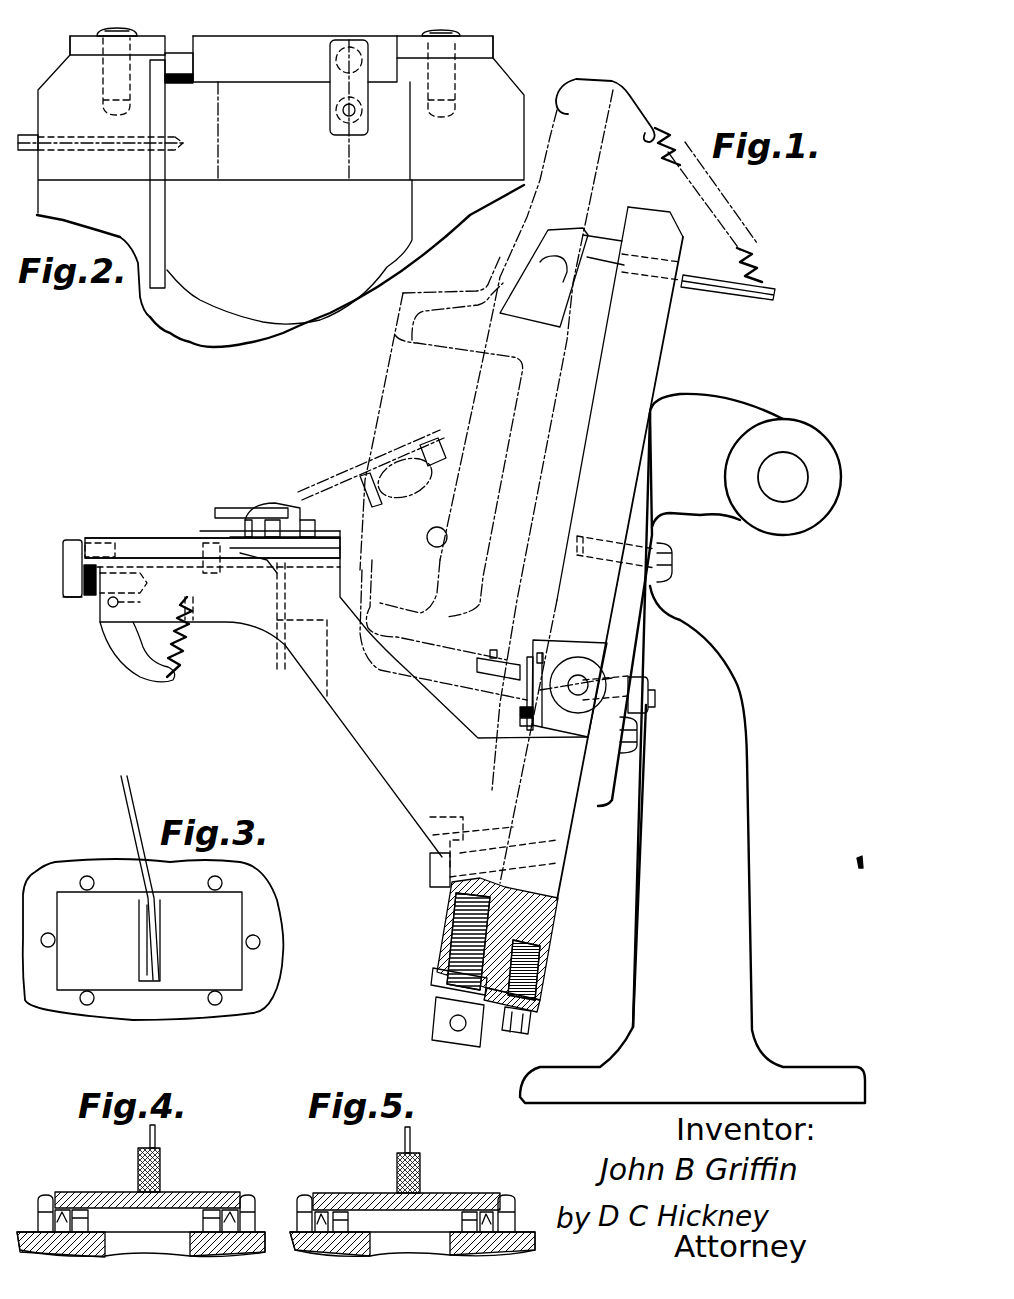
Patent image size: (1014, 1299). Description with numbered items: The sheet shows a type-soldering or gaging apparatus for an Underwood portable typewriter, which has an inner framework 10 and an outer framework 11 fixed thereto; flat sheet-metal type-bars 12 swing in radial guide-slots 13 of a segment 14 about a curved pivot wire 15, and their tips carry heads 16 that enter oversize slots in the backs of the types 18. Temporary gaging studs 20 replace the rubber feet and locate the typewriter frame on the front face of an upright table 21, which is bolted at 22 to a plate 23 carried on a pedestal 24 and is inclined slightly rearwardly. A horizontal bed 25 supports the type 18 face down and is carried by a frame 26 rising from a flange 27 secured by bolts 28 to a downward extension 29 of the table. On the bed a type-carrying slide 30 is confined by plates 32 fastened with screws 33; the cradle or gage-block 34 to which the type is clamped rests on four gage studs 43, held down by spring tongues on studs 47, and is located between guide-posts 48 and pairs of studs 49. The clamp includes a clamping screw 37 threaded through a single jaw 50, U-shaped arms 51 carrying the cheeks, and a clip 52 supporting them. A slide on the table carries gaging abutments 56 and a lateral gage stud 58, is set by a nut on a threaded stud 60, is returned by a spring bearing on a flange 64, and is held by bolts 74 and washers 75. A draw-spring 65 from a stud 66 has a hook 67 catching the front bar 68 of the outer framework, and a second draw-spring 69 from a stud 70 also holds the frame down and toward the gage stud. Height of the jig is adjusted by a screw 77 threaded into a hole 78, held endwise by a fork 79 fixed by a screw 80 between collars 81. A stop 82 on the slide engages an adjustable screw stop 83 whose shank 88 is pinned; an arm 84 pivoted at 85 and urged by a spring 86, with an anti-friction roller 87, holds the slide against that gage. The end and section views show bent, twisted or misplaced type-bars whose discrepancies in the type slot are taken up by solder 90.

In FIG. 1, the inner framework 10 is at (487, 354).
In FIG. 1, the outer framework 11 is at (502, 247).
In FIG. 1, the type-bar 12 is at (345, 470).
In FIG. 3, the type-bar 12 is at (124, 816).
In FIG. 4, the type-bar 12 is at (156, 1137).
In FIG. 5, the type-bar 12 is at (412, 1138).
In FIG. 1, the guide-slot 13 is at (430, 456).
In FIG. 1, the segment 14 is at (398, 502).
In FIG. 1, the pivot wire 15 is at (418, 482).
In FIG. 1, the head 16 is at (272, 499).
In FIG. 1, the type 18 is at (300, 490).
In FIG. 3, the type 18 is at (140, 941).
In FIG. 1, the gaging stud 20 is at (590, 277).
In FIG. 1, the table 21 is at (668, 350).
In FIG. 1, the bolt 22 is at (583, 543).
In FIG. 1, the plate 23 is at (598, 810).
In FIG. 1, the pedestal 24 is at (752, 802).
In FIG. 2, the bed 25 is at (281, 124).
In FIG. 1, the bed 25 is at (263, 697).
In FIG. 3, the bed 25 is at (278, 936).
In FIG. 4, the bed 25 is at (126, 1238).
In FIG. 5, the bed 25 is at (412, 1244).
In FIG. 2, the frame 26 is at (280, 263).
In FIG. 1, the frame 26 is at (345, 753).
In FIG. 1, the flange 27 is at (493, 829).
In FIG. 1, the bolt 28 is at (432, 870).
In FIG. 1, the downward extension 29 is at (545, 967).
In FIG. 2, the type-carrying slide 30 is at (295, 51).
In FIG. 2, the plate 32 is at (75, 44).
In FIG. 1, the plate 32 is at (137, 540).
In FIG. 2, the screw 33 is at (125, 32).
In FIG. 3, the cradle 34 is at (149, 941).
In FIG. 4, the cradle 34 is at (115, 1192).
In FIG. 5, the cradle 34 is at (363, 1193).
In FIG. 1, the clamping screw 37 is at (278, 668).
In FIG. 4, the gage-stud 43 is at (60, 1210).
In FIG. 5, the gage-stud 43 is at (404, 1222).
In FIG. 1, the stud 47 is at (342, 549).
In FIG. 3, the guide-post 48 is at (46, 947).
In FIG. 4, the guide-post 48 is at (44, 1196).
In FIG. 5, the guide-post 48 is at (406, 1213).
In FIG. 1, the stud 49 is at (342, 538).
In FIG. 3, the stud 49 is at (94, 883).
In FIG. 4, the stud 49 is at (80, 1210).
In FIG. 5, the stud 49 is at (405, 1222).
In FIG. 1, the jaw 50 is at (292, 562).
In FIG. 1, the arm 51 is at (238, 533).
In FIG. 1, the clip 52 is at (228, 510).
In FIG. 1, the gaging abutment 56 is at (477, 667).
In FIG. 1, the gage stud 58 is at (490, 653).
In FIG. 1, the threaded stud 60 is at (577, 697).
In FIG. 1, the flange 64 is at (585, 642).
In FIG. 1, the draw-spring 65 is at (760, 255).
In FIG. 1, the stud 66 is at (777, 292).
In FIG. 1, the hook 67 is at (640, 100).
In FIG. 1, the front bar 68 is at (388, 377).
In FIG. 1, the draw-spring 69 is at (583, 712).
In FIG. 1, the stud 70 is at (522, 722).
In FIG. 1, the bolt 74 is at (520, 687).
In FIG. 1, the washer 75 is at (541, 655).
In FIG. 1, the screw 77 is at (545, 930).
In FIG. 1, the hole 78 is at (460, 905).
In FIG. 1, the fork 79 is at (540, 1010).
In FIG. 1, the screw 80 is at (528, 1032).
In FIG. 1, the collar 81 is at (440, 1000).
In FIG. 2, the stop 82 is at (332, 106).
In FIG. 1, the stop 82 is at (72, 603).
In FIG. 2, the screw stop 83 is at (358, 121).
In FIG. 1, the screw stop 83 is at (107, 597).
In FIG. 2, the arm 84 is at (162, 238).
In FIG. 1, the arm 84 is at (62, 585).
In FIG. 2, the pivot 85 is at (148, 152).
In FIG. 1, the pivot 85 is at (132, 593).
In FIG. 1, the spring 86 is at (184, 646).
In FIG. 2, the anti-friction roller 87 is at (180, 57).
In FIG. 1, the anti-friction roller 87 is at (76, 540).
In FIG. 2, the shank 88 is at (352, 50).
In FIG. 1, the shank 88 is at (101, 545).
In FIG. 3, the solder 90 is at (157, 905).
In FIG. 4, the solder 90 is at (138, 1157).
In FIG. 5, the solder 90 is at (420, 1170).